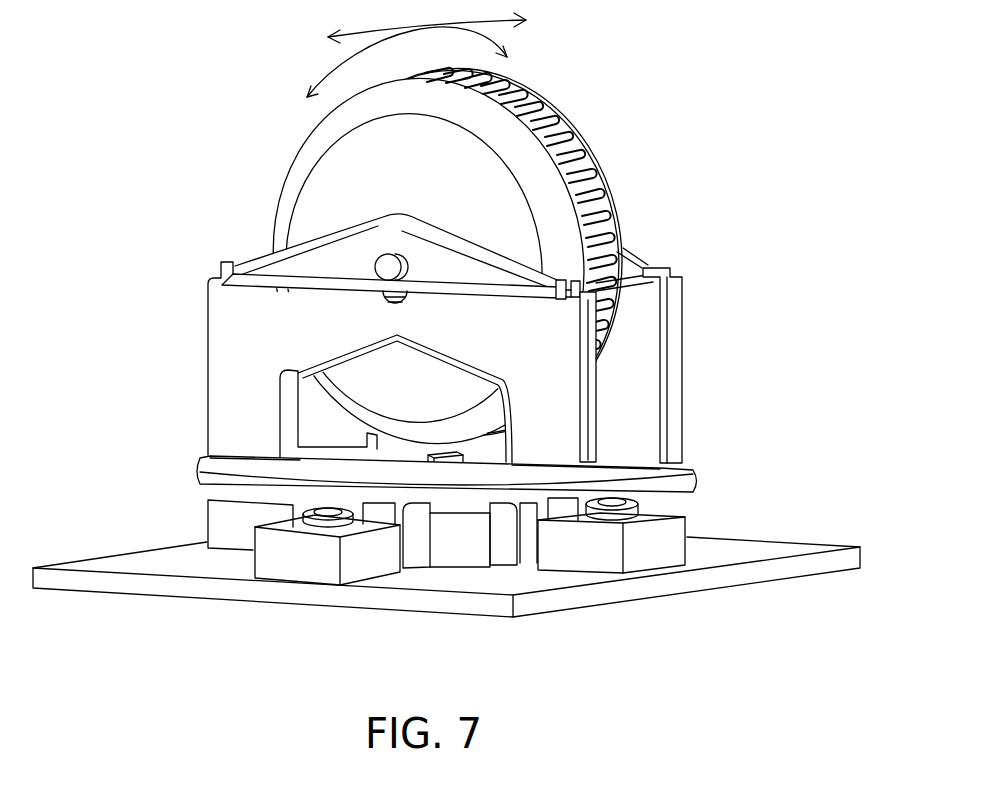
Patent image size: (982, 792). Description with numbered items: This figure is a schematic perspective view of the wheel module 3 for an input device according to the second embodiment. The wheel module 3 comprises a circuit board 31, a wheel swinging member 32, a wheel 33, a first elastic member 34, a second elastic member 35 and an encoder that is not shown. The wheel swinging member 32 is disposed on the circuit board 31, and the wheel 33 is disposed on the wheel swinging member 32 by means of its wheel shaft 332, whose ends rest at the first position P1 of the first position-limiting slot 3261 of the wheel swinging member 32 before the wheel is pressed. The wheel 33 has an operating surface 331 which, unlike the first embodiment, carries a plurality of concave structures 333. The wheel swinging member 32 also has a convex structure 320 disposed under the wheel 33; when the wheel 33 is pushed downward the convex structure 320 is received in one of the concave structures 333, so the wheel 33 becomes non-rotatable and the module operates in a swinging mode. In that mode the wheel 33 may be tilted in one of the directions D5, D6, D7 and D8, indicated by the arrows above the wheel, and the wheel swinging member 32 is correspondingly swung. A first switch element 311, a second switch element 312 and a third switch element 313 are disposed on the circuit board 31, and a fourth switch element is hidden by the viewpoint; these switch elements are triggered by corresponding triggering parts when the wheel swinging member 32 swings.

The wheel module 3 is at (740, 96).
The circuit board 31 is at (770, 548).
The first switch element 311 is at (220, 530).
The second switch element 312 is at (673, 543).
The third switch element 313 is at (275, 565).
The wheel swinging member 32 is at (696, 352).
The convex structure 320 is at (450, 452).
The first position-limiting slot 3261 is at (395, 302).
The wheel 33 is at (262, 238).
The operating surface 331 is at (577, 130).
The wheel shaft 332 is at (382, 253).
The concave structures 333 is at (553, 105).
The first elastic member 34 is at (262, 282).
The second elastic member 35 is at (473, 545).
The first position P1 is at (390, 258).
The direction D5 is at (406, 34).
The direction D6 is at (523, 62).
The direction D7 is at (384, 69).
The direction D8 is at (542, 22).